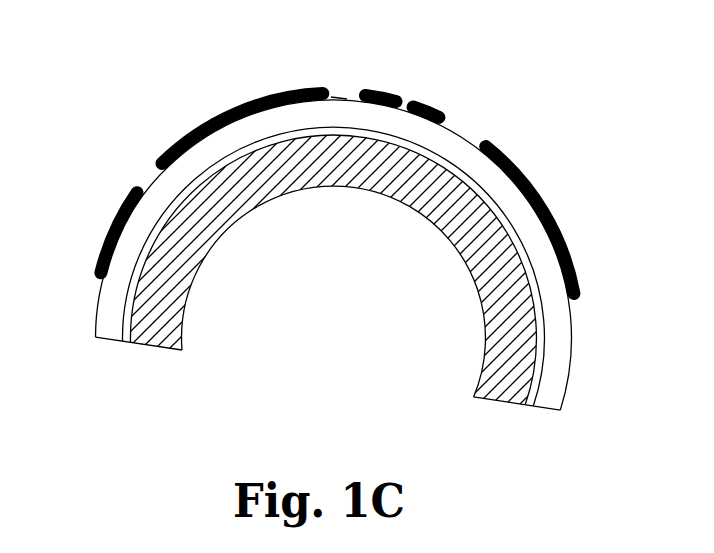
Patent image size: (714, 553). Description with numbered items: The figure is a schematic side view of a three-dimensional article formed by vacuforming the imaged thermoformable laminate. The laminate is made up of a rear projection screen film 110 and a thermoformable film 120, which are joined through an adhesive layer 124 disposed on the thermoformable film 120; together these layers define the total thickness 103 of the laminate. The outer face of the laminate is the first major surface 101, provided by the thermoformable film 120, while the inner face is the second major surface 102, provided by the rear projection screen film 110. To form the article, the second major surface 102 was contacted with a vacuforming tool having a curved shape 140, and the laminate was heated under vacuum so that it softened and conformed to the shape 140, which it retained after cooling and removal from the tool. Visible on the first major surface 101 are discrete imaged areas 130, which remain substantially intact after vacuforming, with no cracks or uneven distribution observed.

The first major surface of laminate 101 is at (344, 96).
The second major surface of laminate 102 is at (332, 184).
The total thickness 103 is at (487, 296).
The rear projection screen film 110 is at (490, 392).
The thermoformable film 120 is at (554, 396).
The adhesive layer 124 is at (528, 396).
The imaged areas 130 is at (166, 155).
The curved shape 140 is at (197, 267).